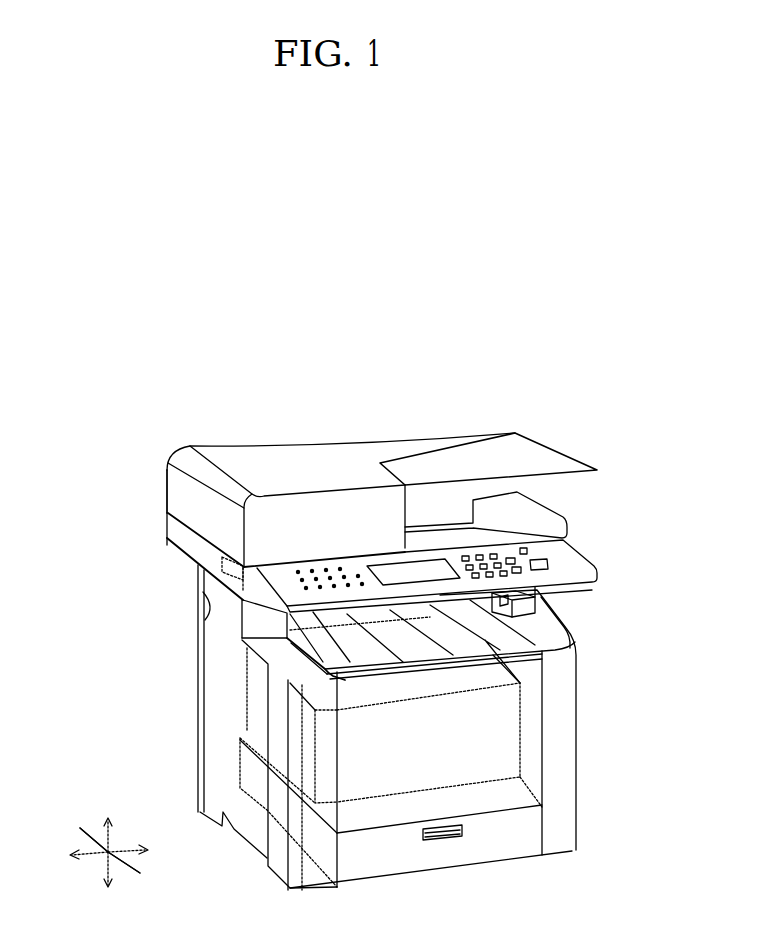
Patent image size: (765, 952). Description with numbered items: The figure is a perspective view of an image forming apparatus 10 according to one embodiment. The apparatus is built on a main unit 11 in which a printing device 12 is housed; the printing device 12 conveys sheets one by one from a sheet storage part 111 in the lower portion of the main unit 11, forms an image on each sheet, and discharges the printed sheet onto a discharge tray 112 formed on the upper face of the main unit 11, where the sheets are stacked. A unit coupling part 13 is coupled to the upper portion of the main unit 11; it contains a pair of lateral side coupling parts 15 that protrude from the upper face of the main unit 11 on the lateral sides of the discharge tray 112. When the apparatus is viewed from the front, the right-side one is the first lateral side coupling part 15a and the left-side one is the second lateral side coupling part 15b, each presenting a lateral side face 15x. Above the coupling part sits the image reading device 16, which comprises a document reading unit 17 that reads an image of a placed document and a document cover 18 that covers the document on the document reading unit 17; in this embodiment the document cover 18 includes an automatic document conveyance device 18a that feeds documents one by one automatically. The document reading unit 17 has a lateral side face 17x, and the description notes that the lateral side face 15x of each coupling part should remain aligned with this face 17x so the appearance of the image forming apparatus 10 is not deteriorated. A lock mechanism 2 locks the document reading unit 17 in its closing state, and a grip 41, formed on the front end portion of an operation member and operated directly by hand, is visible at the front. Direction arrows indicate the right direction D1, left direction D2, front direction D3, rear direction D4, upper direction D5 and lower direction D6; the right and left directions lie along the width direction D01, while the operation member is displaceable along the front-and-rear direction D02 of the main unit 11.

The image forming apparatus 10 is at (158, 432).
The image reading device 16 is at (97, 487).
The document cover 18 is at (160, 507).
The automatic document conveyance device 18a is at (300, 458).
The document reading unit 17 is at (160, 533).
The lateral side face of document reading unit 17x is at (168, 488).
The unit coupling part 13 is at (184, 580).
The lock mechanism 2 is at (211, 567).
The lateral side coupling parts 15 is at (369, 610).
The first lateral side coupling part 15a is at (538, 598).
The second lateral side coupling part 15b is at (199, 597).
The lateral side face of lateral side coupling part 15x is at (202, 618).
The grip 41 is at (597, 581).
The main unit 11 is at (191, 690).
The discharge tray 112 is at (548, 656).
The printing device 12 is at (524, 730).
The sheet storage part 111 is at (526, 833).
The right direction D1 is at (143, 852).
The left direction D2 is at (74, 859).
The front direction D3 is at (137, 879).
The rear direction D4 is at (79, 830).
The upper direction D5 is at (108, 820).
The lower direction D6 is at (108, 882).
The width direction D01 is at (120, 848).
The front-and-rear direction D02 is at (140, 861).